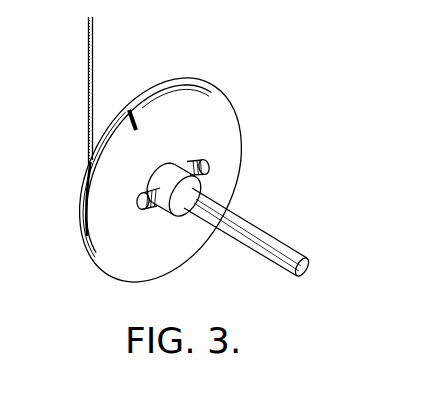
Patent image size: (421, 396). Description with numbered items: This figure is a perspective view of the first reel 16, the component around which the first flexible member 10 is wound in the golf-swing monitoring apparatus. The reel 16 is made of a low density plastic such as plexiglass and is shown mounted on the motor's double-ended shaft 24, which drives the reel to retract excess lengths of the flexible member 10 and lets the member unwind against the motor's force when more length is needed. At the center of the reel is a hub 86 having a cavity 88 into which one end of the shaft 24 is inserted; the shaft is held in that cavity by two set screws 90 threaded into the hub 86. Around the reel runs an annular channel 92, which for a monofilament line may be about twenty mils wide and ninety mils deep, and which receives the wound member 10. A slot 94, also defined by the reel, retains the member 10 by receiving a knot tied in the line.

The first flexible member 10 is at (88, 58).
The first reel 16 is at (255, 206).
The double-ended shaft 24 is at (282, 239).
The hub 86 is at (161, 218).
The cavity 88 is at (186, 224).
The set screws 90 is at (203, 161).
The annular channel 92 is at (88, 163).
The slot 94 is at (131, 116).